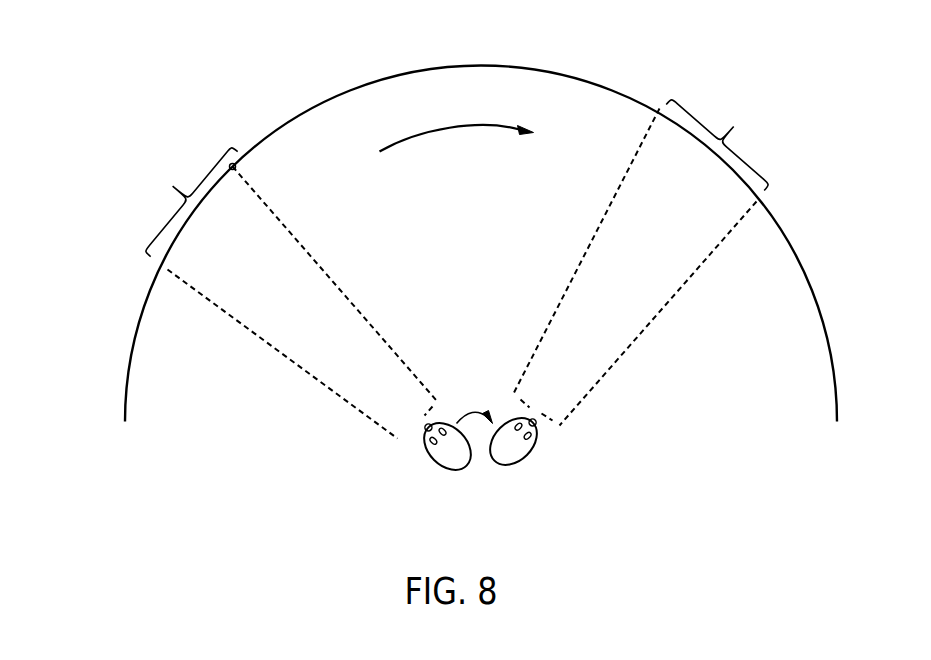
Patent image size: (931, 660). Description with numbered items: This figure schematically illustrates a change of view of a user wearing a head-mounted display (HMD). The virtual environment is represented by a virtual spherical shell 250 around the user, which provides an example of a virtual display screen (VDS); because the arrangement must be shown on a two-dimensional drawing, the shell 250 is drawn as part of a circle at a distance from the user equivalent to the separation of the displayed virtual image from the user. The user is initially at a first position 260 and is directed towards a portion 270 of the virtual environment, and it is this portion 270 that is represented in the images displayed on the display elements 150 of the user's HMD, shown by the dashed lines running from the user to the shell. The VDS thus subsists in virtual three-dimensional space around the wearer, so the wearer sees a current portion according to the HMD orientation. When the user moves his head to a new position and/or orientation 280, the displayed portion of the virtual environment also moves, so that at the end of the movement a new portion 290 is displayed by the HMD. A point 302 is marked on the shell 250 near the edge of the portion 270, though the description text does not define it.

The display elements 150 is at (413, 423).
The spherical shell 250 is at (127, 381).
The first position 260 is at (432, 460).
The portion of the virtual environment 270 is at (180, 202).
The new position and/or orientation 280 is at (530, 456).
The new portion 290 is at (726, 145).
The reference point 302 is at (230, 166).